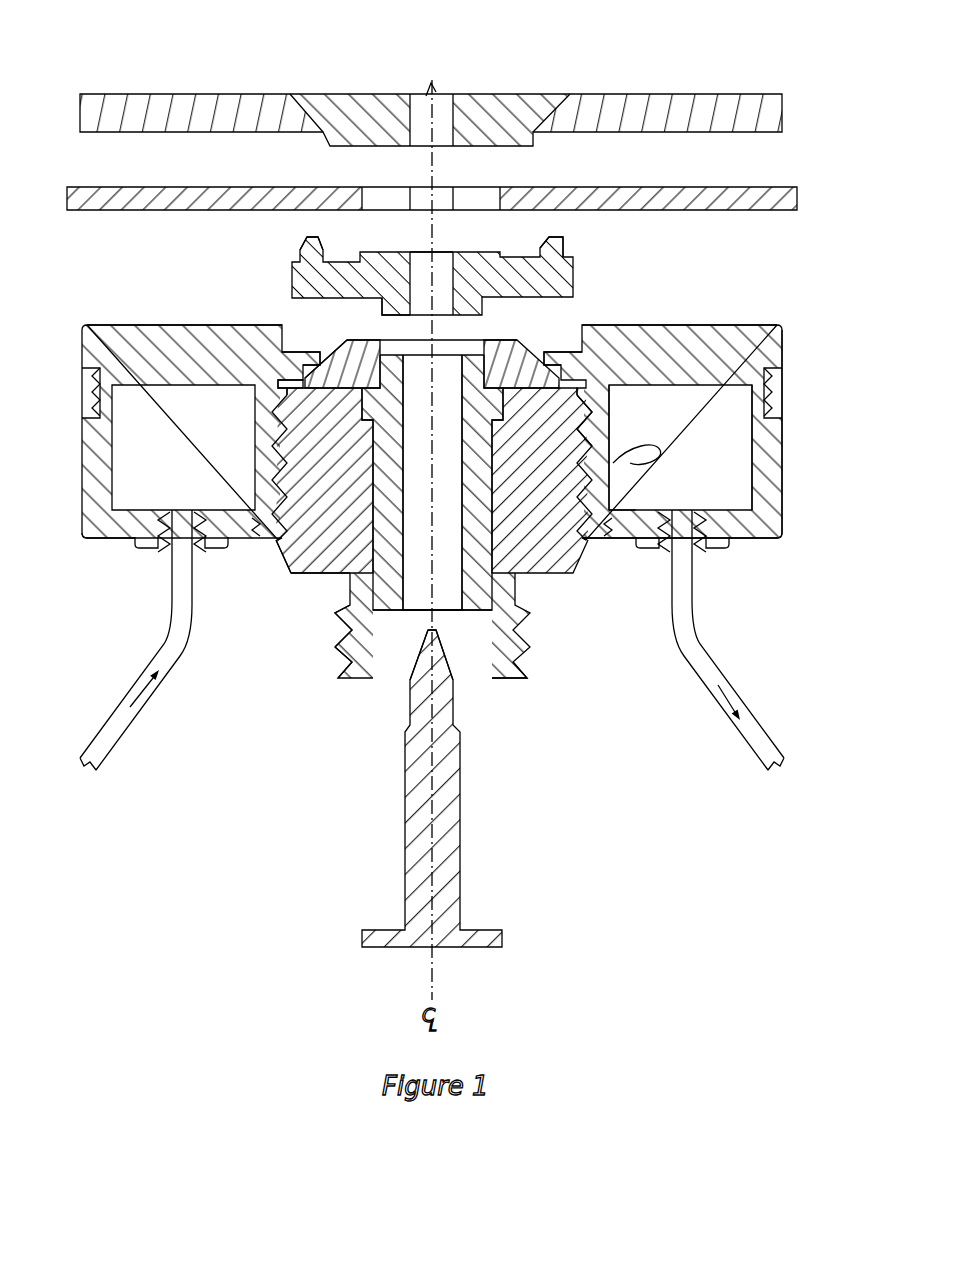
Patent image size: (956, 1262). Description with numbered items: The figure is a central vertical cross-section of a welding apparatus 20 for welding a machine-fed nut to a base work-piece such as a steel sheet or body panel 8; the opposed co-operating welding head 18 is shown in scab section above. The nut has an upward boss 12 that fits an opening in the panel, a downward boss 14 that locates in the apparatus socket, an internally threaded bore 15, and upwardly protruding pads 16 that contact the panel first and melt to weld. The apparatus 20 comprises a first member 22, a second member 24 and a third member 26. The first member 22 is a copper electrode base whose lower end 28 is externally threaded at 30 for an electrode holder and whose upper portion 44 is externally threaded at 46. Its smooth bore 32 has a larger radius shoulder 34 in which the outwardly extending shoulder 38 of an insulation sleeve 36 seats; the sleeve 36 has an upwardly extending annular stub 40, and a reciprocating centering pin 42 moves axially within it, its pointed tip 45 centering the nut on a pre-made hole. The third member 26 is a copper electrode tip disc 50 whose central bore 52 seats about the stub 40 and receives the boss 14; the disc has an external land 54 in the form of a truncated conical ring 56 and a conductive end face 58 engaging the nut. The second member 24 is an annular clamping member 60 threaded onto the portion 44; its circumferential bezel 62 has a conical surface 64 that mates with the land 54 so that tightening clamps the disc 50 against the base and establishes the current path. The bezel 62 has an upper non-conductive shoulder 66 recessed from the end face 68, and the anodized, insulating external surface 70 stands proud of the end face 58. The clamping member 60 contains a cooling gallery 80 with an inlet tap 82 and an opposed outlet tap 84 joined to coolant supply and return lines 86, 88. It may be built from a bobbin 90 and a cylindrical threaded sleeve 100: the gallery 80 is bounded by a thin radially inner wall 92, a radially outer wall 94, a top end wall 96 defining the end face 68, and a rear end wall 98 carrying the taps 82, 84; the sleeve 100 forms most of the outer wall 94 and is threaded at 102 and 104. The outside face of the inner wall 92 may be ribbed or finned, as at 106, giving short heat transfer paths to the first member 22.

The body panel 8 is at (723, 187).
The upward boss 12 is at (500, 255).
The downward facing boss 14 is at (382, 298).
The internally threaded bore 15 is at (420, 252).
The pads 16 is at (307, 240).
The co-operating welding head 18 is at (492, 87).
The welding apparatus 20 is at (597, 810).
The first member 22 is at (320, 573).
The second member 24 is at (93, 538).
The third member 26 is at (573, 365).
The lower end 28 is at (363, 676).
The external threads 30 is at (340, 648).
The smooth bore 32 is at (481, 678).
The shoulder 34 is at (492, 430).
The insulation sleeve 36 is at (378, 614).
The outwardly extending shoulder 38 is at (372, 427).
The annular stub 40 is at (603, 428).
The centering pin 42 is at (458, 797).
The upper portion 44 is at (335, 580).
The pointed tip 45 is at (458, 692).
The external threads 46 is at (277, 560).
The copper disc 50 is at (540, 335).
The central bore 52 is at (465, 338).
The external land 54 is at (318, 360).
The truncated conical ring 56 is at (300, 375).
The end face 58 is at (352, 340).
The clamping member 60 is at (722, 325).
The bezel 62 is at (593, 362).
The conical surface 64 is at (295, 368).
The upper shoulder 66 is at (298, 362).
The end face 68 is at (116, 325).
The external surface 70 is at (132, 325).
The cooling gallery 80 is at (724, 441).
The inlet tap 82 is at (145, 550).
The outlet tap 84 is at (700, 552).
The coolant supply line 86 is at (162, 650).
The coolant return line 88 is at (698, 652).
The bobbin 90 is at (783, 345).
The radially inner wall 92 is at (613, 430).
The radially outer wall 94 is at (785, 535).
The top end wall 96 is at (764, 325).
The rear end wall 98 is at (760, 542).
The threaded sleeve 100 is at (783, 495).
The thread 102 is at (623, 538).
The thread 104 is at (783, 397).
The rib or fin 106 is at (255, 448).